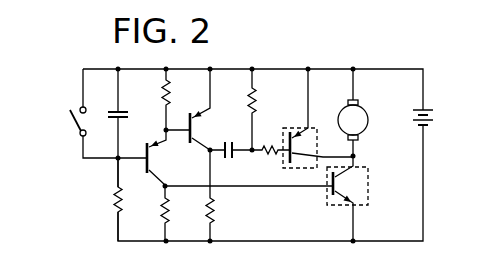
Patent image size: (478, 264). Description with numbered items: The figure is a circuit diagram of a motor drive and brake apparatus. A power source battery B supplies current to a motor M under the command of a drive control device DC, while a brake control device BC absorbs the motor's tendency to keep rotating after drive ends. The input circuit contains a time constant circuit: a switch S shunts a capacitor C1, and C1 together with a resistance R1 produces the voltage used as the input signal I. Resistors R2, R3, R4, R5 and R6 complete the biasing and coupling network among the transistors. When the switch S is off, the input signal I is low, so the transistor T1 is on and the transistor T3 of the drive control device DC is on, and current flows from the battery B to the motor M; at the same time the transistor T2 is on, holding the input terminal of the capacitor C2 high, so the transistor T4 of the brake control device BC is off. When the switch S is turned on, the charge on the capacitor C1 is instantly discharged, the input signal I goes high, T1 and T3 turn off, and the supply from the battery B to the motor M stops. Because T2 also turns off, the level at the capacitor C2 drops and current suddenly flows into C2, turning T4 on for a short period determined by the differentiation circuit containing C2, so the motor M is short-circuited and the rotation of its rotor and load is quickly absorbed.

The switch S is at (106, 113).
The capacitor C1 is at (111, 100).
The capacitor C2 is at (231, 162).
The resistance R1 is at (134, 199).
The resistor R2 is at (160, 99).
The resistor R3 is at (181, 213).
The resistor R4 is at (226, 195).
The resistor R5 is at (268, 109).
The resistor R6 is at (271, 163).
The transistor T1 is at (168, 157).
The transistor T2 is at (214, 109).
The transistor T3 is at (353, 198).
The transistor T4 is at (321, 116).
The input signal I is at (126, 172).
The brake control device BC is at (313, 126).
The drive control device DC is at (343, 206).
The motor M is at (353, 112).
The power source battery B is at (433, 117).